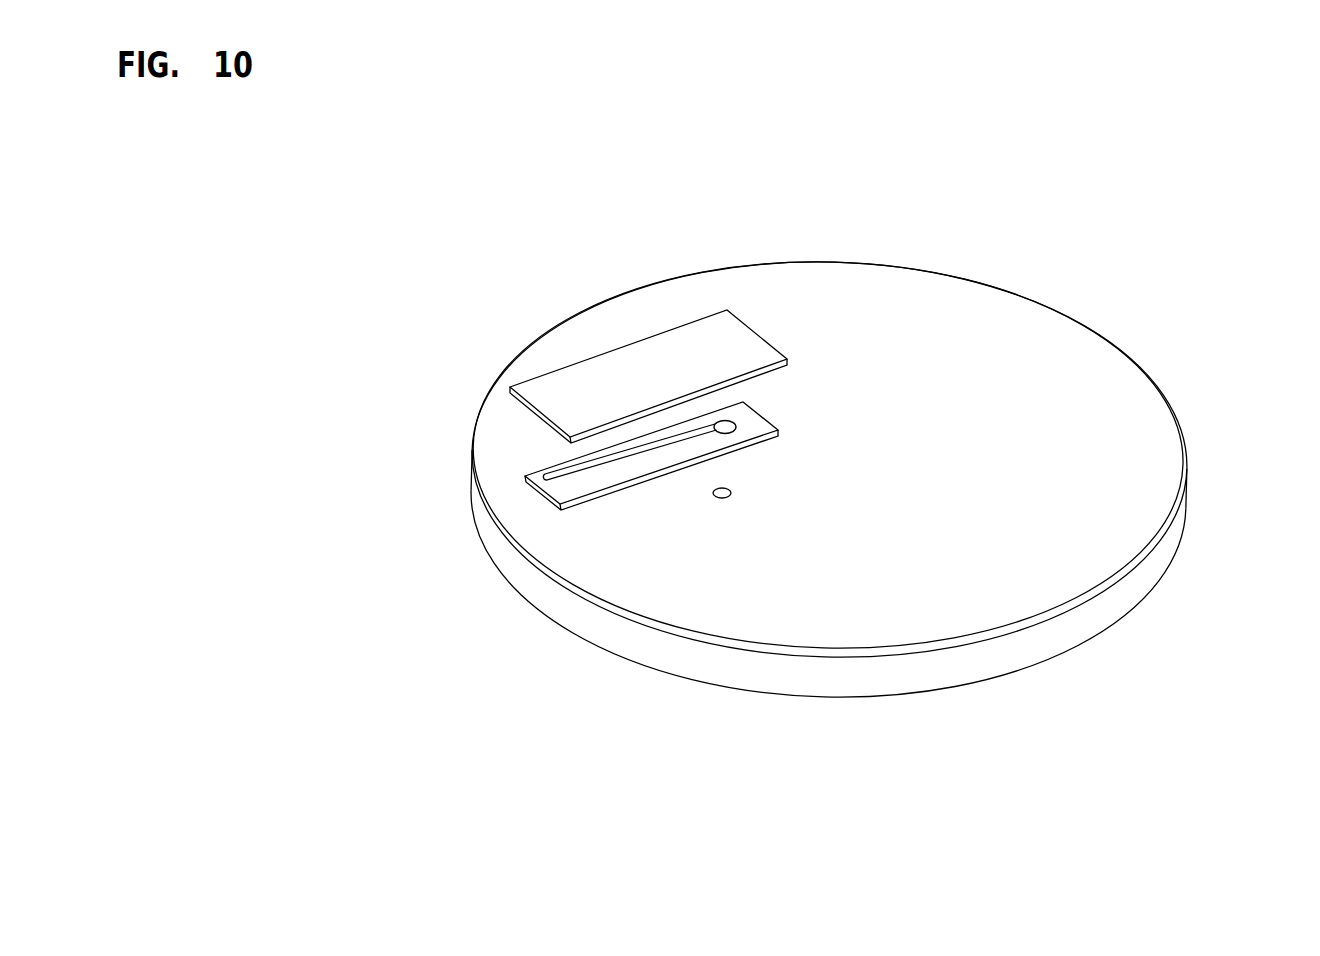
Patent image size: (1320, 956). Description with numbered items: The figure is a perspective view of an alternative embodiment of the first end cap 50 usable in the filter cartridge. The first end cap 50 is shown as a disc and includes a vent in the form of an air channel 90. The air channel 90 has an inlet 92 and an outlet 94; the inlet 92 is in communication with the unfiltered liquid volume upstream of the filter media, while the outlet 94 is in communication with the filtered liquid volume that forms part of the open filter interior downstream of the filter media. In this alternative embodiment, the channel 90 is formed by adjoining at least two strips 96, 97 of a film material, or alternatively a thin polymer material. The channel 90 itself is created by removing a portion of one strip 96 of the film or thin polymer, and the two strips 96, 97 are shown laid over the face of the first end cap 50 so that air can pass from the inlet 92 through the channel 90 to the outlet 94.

The first end cap 50 is at (1098, 387).
The air channel 90 is at (582, 504).
The inlet 92 is at (543, 495).
The outlet 94 is at (733, 493).
The strip 96 is at (657, 367).
The strip 97 is at (546, 473).